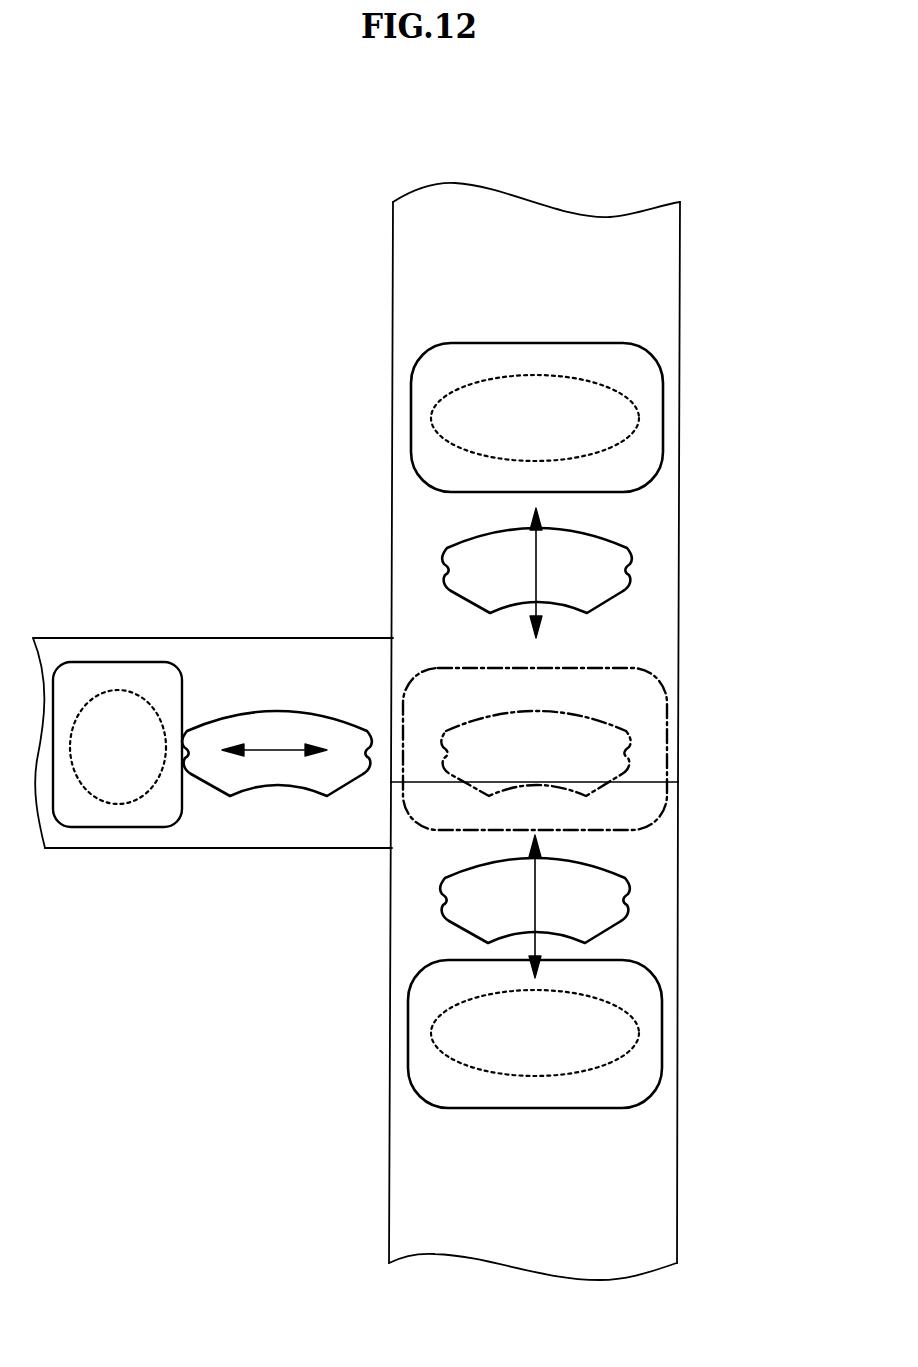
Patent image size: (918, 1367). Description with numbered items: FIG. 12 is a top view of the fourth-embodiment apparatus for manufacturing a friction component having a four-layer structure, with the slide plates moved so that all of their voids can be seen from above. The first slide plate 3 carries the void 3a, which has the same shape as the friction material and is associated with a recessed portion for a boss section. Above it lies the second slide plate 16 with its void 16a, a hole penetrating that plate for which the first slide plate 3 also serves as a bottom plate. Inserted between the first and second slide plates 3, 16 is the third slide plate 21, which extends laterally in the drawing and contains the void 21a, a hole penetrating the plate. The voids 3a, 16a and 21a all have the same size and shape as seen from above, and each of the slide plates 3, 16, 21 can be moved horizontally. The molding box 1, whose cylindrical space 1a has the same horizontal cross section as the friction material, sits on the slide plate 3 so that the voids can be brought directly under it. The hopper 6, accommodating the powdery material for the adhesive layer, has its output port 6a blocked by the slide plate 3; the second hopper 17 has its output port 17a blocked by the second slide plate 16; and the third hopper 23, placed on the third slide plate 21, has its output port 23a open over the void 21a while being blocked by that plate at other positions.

The first slide plate 3 is at (680, 263).
The hopper 6 is at (657, 357).
The output port 6a is at (639, 427).
The void 3a is at (628, 572).
The molding box 1 is at (655, 683).
The cylindrical space 1a is at (630, 759).
The void 16a is at (628, 900).
The second slide plate 16 is at (677, 942).
The second hopper 17 is at (662, 1045).
The output port 17a is at (615, 1058).
The third slide plate 21 is at (263, 638).
The void 21a is at (288, 783).
The third hopper 23 is at (128, 827).
The output port 23a is at (118, 690).